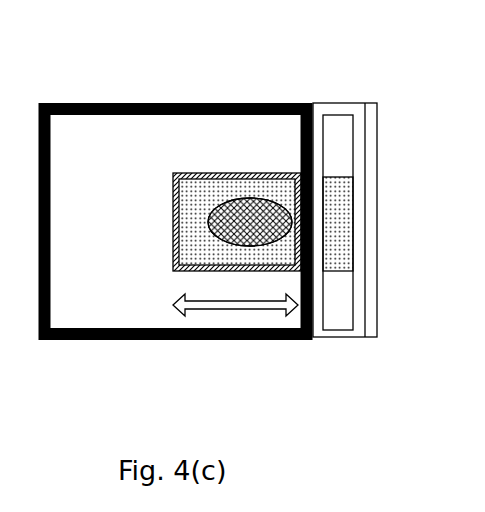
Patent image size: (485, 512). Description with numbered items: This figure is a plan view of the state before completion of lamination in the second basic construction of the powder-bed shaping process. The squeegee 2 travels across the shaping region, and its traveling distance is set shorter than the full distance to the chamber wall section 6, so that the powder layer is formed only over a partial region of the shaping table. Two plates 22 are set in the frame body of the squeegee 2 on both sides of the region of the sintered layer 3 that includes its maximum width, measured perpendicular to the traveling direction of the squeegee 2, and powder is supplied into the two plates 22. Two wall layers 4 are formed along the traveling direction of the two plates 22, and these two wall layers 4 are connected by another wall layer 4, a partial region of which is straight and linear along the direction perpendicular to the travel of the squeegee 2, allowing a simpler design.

The squeegee 2 is at (338, 200).
The sintered layer 3 is at (222, 200).
The wall layer 4 is at (175, 200).
The chamber wall section 6 is at (39, 222).
The plate 22 is at (325, 268).